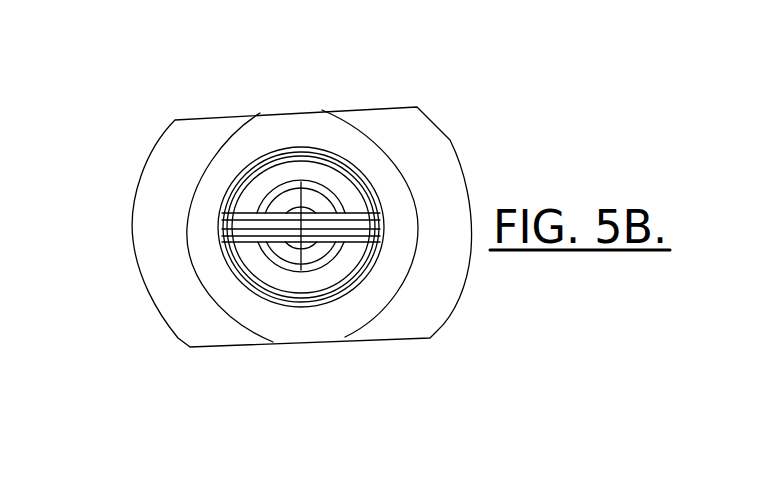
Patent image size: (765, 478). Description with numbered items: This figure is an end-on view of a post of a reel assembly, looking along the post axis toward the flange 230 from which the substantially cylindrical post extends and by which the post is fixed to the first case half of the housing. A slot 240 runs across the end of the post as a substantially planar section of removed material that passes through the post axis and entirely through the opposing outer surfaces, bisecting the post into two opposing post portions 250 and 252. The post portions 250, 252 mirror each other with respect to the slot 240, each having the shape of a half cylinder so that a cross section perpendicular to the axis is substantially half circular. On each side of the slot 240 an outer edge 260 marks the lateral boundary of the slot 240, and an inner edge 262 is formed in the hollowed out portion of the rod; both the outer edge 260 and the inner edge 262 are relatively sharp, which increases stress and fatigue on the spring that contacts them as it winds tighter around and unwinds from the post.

The flange 230 is at (289, 261).
The slot 240 is at (202, 255).
The post portion 250 is at (305, 168).
The post portion 252 is at (305, 273).
The outer edge 260 is at (383, 211).
The inner edge 262 is at (362, 216).